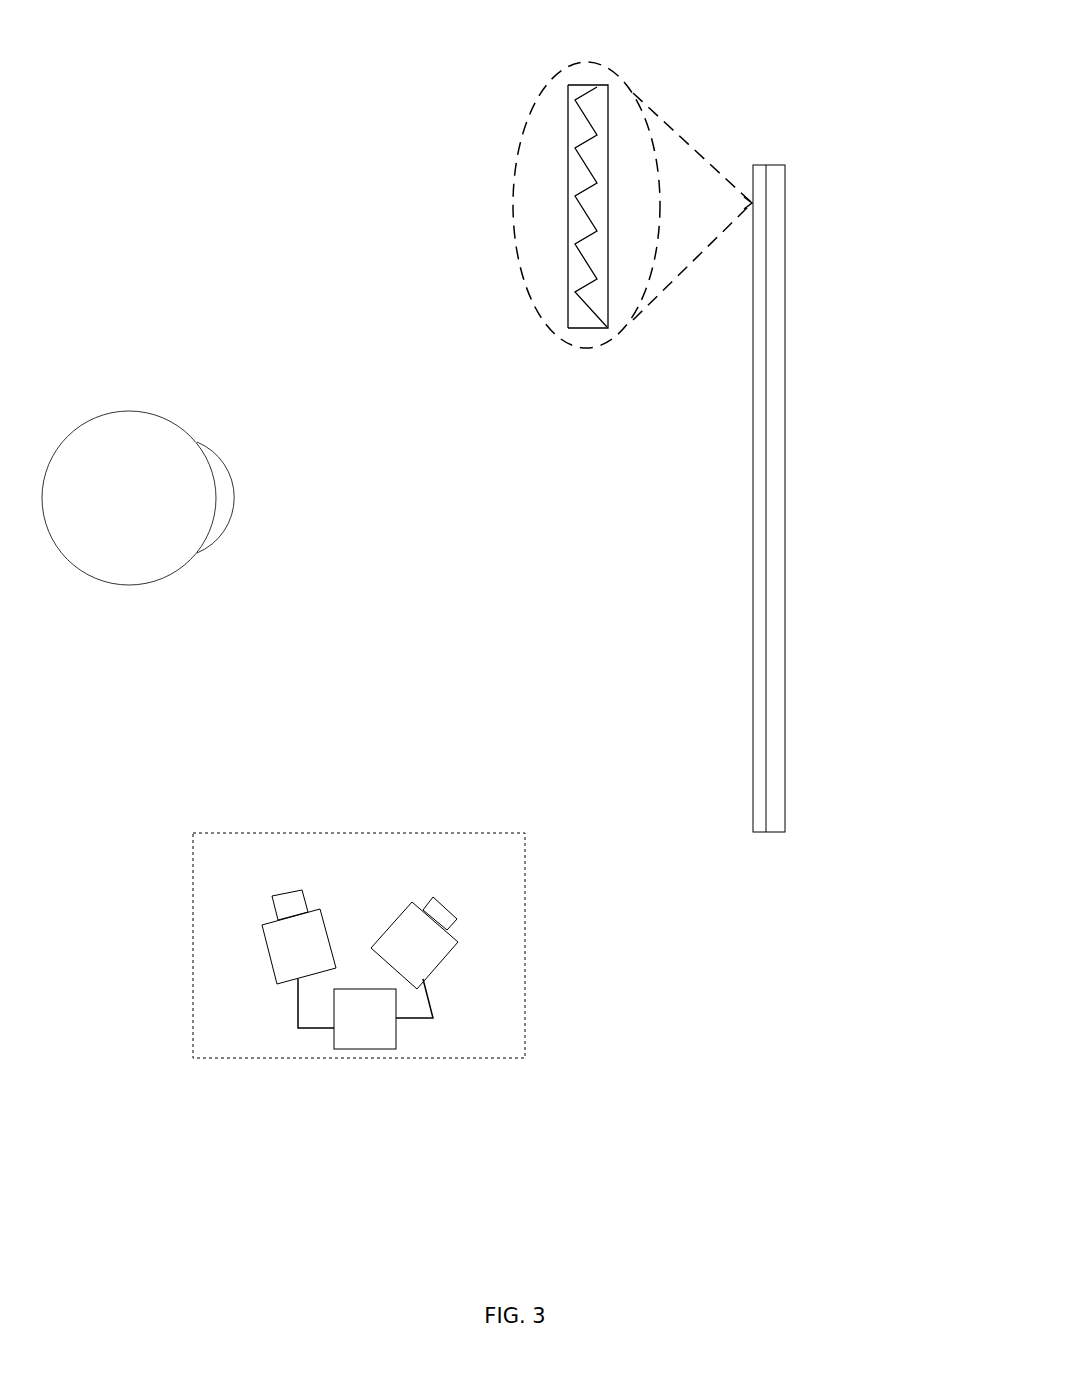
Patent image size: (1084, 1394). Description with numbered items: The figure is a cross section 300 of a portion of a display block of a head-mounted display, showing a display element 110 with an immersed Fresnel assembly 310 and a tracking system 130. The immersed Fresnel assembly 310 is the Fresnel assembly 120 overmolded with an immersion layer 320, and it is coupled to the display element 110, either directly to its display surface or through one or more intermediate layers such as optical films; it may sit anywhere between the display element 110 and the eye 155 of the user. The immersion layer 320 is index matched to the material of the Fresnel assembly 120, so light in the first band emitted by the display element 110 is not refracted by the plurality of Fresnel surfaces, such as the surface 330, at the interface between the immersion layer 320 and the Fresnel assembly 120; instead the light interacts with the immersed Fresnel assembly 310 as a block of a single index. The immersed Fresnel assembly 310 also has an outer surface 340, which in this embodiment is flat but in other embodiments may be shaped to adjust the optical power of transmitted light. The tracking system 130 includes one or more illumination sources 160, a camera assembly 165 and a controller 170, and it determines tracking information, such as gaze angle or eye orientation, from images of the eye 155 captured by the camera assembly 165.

The cross section 300 is at (50, 105).
The display element 110 is at (785, 218).
The Fresnel assembly 120 is at (517, 274).
The tracking system 130 is at (462, 1041).
The eye 155 is at (67, 560).
The illumination source 160 is at (270, 968).
The camera assembly 165 is at (418, 948).
The controller 170 is at (368, 1028).
The immersed Fresnel assembly 310 is at (623, 554).
The immersion layer 320 is at (575, 131).
The surface 330 is at (583, 265).
The outer surface 340 is at (567, 205).